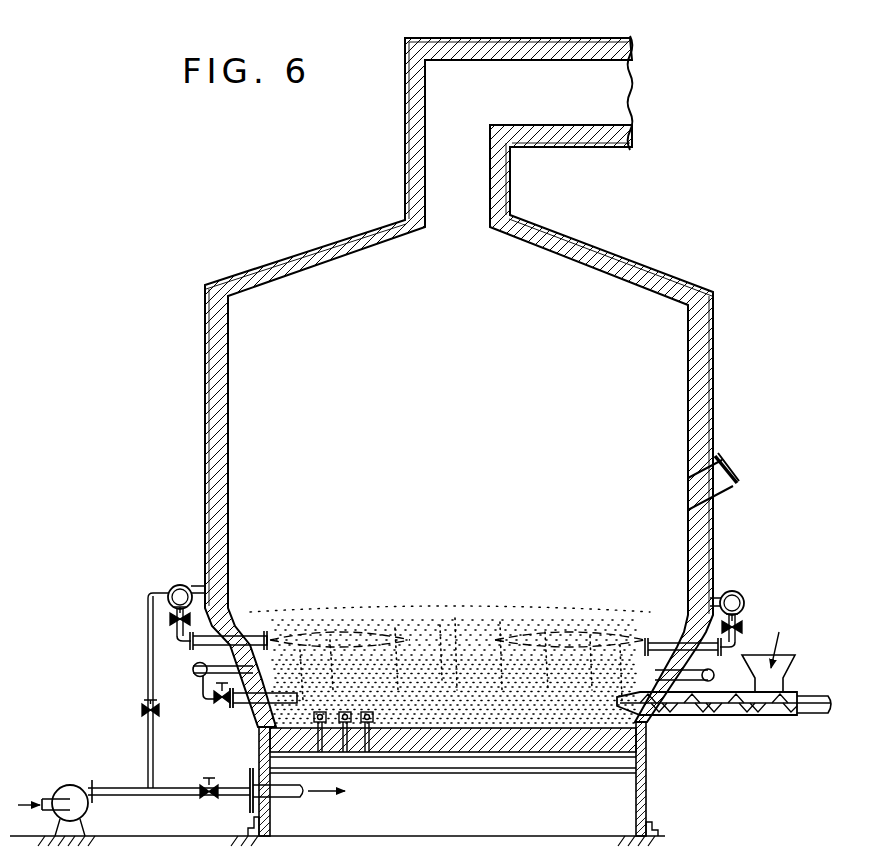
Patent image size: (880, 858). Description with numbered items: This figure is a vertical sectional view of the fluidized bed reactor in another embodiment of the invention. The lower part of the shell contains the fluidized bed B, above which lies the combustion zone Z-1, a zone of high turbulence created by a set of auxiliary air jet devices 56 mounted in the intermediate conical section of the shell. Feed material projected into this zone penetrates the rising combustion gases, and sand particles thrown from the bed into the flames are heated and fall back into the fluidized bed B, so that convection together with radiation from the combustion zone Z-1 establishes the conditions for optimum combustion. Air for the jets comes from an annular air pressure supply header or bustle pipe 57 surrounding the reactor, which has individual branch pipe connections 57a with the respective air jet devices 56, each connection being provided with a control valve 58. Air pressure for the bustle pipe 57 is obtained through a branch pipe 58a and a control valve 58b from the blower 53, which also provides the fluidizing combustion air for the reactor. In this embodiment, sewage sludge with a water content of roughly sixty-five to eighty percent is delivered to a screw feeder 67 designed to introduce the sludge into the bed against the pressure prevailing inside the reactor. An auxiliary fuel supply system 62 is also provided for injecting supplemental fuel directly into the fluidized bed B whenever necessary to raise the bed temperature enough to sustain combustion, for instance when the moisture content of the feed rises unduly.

The blower 53 is at (75, 788).
The auxiliary air jet devices 56 is at (258, 632).
The bustle pipe 57 is at (198, 587).
The branch pipe connections 57a is at (185, 650).
The control valve 58 is at (173, 623).
The branch pipe 58a is at (148, 757).
The control valve 58b is at (146, 711).
The auxiliary fuel supply system 62 is at (256, 702).
The screw feeder 67 is at (712, 714).
The fluidized bed B is at (457, 730).
The combustion zone Z-1 is at (475, 622).